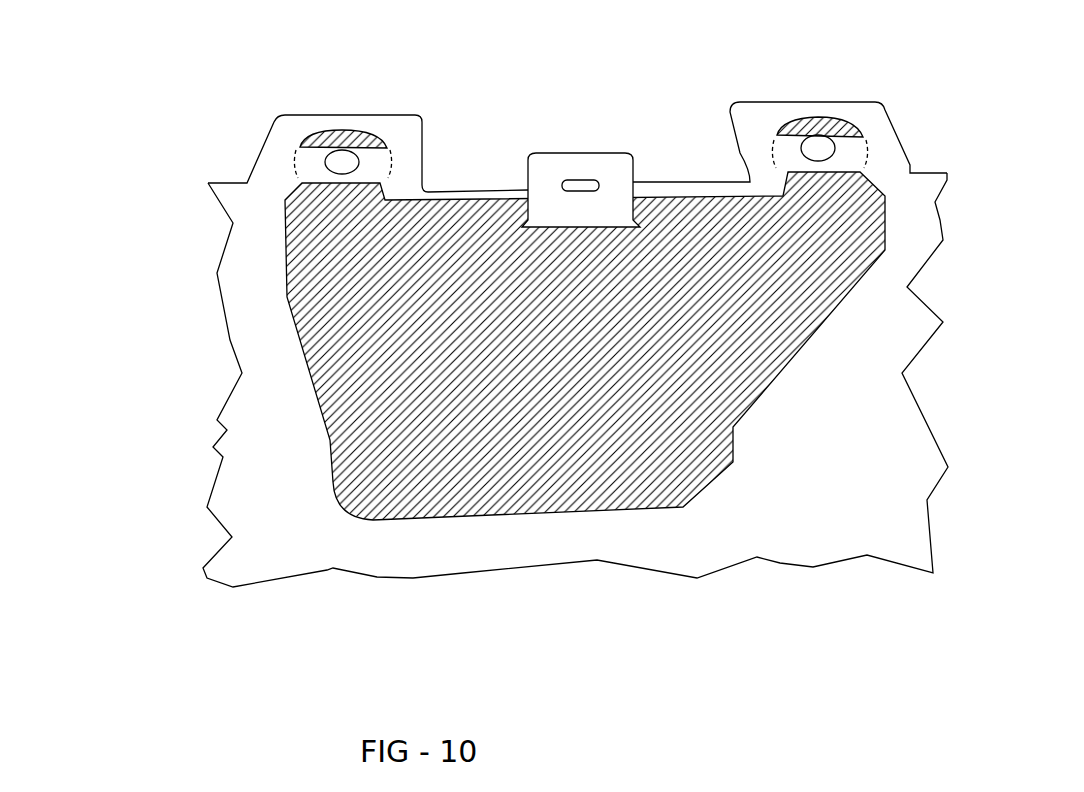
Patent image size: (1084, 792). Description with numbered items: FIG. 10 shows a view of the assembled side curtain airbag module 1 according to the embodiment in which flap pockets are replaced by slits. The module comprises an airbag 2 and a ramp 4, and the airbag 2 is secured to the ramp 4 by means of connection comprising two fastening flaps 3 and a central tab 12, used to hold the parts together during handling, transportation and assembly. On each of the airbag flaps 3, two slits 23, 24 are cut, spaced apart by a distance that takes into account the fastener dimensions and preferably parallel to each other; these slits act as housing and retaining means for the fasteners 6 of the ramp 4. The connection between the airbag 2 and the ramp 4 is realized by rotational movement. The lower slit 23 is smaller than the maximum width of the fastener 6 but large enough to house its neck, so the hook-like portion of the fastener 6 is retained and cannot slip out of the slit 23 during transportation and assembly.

The side curtain airbag module 1 is at (147, 340).
The airbag 2 is at (827, 550).
The fastening flaps 3 is at (280, 138).
The ramp 4 is at (427, 520).
The ramp fastener 6 is at (812, 127).
The tab 12 is at (620, 165).
The lower slit 23 is at (285, 228).
The slit 24 is at (373, 140).